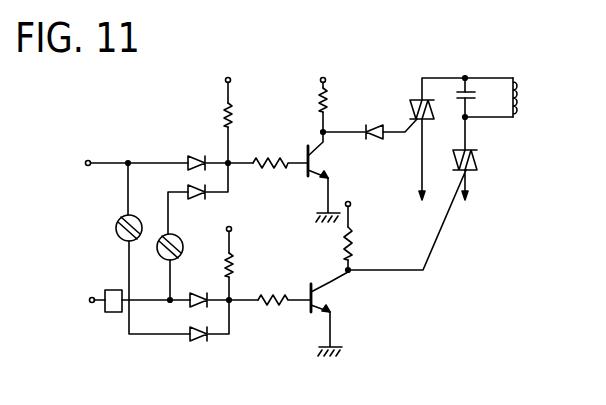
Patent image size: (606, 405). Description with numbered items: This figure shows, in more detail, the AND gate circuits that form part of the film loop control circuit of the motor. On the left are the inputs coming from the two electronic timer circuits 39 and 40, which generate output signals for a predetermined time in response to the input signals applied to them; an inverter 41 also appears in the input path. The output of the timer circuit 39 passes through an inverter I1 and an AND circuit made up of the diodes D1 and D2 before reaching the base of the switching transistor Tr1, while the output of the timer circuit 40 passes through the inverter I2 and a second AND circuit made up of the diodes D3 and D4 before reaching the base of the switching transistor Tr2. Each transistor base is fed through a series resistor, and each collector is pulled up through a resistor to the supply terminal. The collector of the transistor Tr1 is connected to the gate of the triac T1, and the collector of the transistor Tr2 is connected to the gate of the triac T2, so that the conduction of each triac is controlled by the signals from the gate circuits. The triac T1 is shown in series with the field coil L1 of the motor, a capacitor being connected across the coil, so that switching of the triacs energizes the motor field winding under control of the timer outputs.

The electronic timer circuit 39 is at (86, 152).
The electronic timer circuit 40 is at (87, 289).
The inverter 41 is at (111, 312).
The inverter I1 is at (117, 221).
The inverter I2 is at (160, 256).
The diode D1 is at (195, 147).
The diode D2 is at (195, 206).
The diode D3 is at (200, 286).
The diode D4 is at (200, 348).
The supply voltage terminal TV is at (273, 68).
The switching transistor Tr1 is at (338, 155).
The switching transistor Tr2 is at (342, 292).
The triac T1 is at (439, 113).
The triac T2 is at (482, 163).
The field coil L1 is at (518, 92).